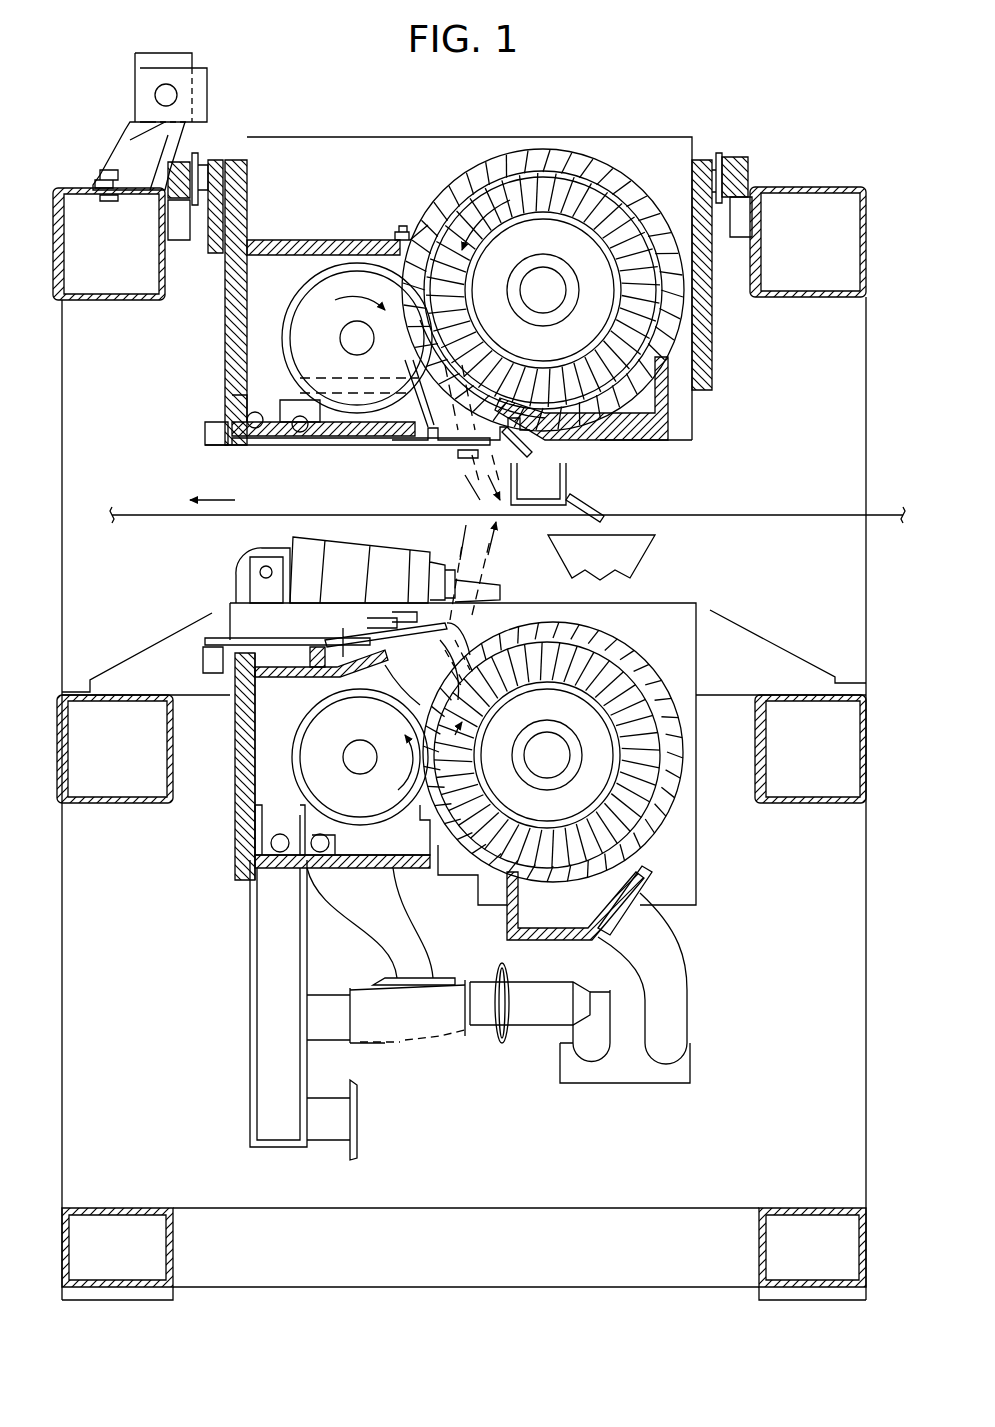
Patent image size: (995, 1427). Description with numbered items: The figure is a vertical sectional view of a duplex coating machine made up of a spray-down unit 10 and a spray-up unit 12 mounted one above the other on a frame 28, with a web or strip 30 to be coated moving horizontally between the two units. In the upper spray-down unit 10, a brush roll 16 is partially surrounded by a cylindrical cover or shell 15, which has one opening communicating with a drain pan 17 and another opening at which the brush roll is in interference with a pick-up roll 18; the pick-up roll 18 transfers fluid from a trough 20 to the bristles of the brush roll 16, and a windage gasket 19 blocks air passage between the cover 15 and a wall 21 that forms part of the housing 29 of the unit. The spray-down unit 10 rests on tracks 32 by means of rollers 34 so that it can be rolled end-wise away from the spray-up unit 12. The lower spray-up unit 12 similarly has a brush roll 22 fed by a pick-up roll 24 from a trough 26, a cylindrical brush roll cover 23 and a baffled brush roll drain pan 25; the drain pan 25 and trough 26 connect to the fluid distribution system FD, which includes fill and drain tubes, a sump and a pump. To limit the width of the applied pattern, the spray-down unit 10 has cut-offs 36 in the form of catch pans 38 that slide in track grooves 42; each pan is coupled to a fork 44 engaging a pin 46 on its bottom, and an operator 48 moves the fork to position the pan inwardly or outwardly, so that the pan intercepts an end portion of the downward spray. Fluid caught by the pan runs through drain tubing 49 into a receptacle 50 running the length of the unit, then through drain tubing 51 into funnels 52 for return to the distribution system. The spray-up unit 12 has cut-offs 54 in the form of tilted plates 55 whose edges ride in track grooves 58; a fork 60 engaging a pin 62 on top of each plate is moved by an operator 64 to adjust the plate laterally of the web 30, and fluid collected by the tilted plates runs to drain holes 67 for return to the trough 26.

The spray-down unit 10 is at (712, 58).
The spray-up unit 12 is at (195, 945).
The cylindrical cover or shell 15 is at (555, 150).
The brush roll 16 is at (596, 380).
The drain pan 17 is at (690, 408).
The pick-up roll 18 is at (292, 295).
The windage gasket 19 is at (418, 232).
The trough 20 is at (120, 300).
The wall 21 is at (310, 240).
The brush roll 22 is at (548, 862).
The cylindrical brush roll cover 23 is at (612, 642).
The pick-up roll 24 is at (440, 613).
The brush roll drain pan 25 is at (505, 920).
The trough 26 is at (395, 850).
The frame 28 is at (790, 805).
The housing 29 is at (222, 340).
The web or strip 30 is at (768, 515).
The tracks 32 is at (182, 225).
The rollers 34 is at (175, 165).
The cut-offs 36 is at (400, 470).
The catch pans 38 is at (430, 452).
The track grooves 42 is at (405, 385).
The fork 44 is at (300, 448).
The pin 46 is at (470, 462).
The operator 48 is at (205, 432).
The drain tubing 49 is at (538, 484).
The receptacle 50 is at (568, 480).
The drain tubing 51 is at (605, 520).
The funnels 52 is at (652, 548).
The cut-offs 54 is at (355, 615).
The plates 55 is at (413, 640).
The track grooves 58 is at (470, 660).
The fork 60 is at (225, 640).
The pin 62 is at (360, 757).
The operator 64 is at (203, 662).
The drain holes 67 is at (330, 680).
The fluid distribution system FD is at (470, 1078).